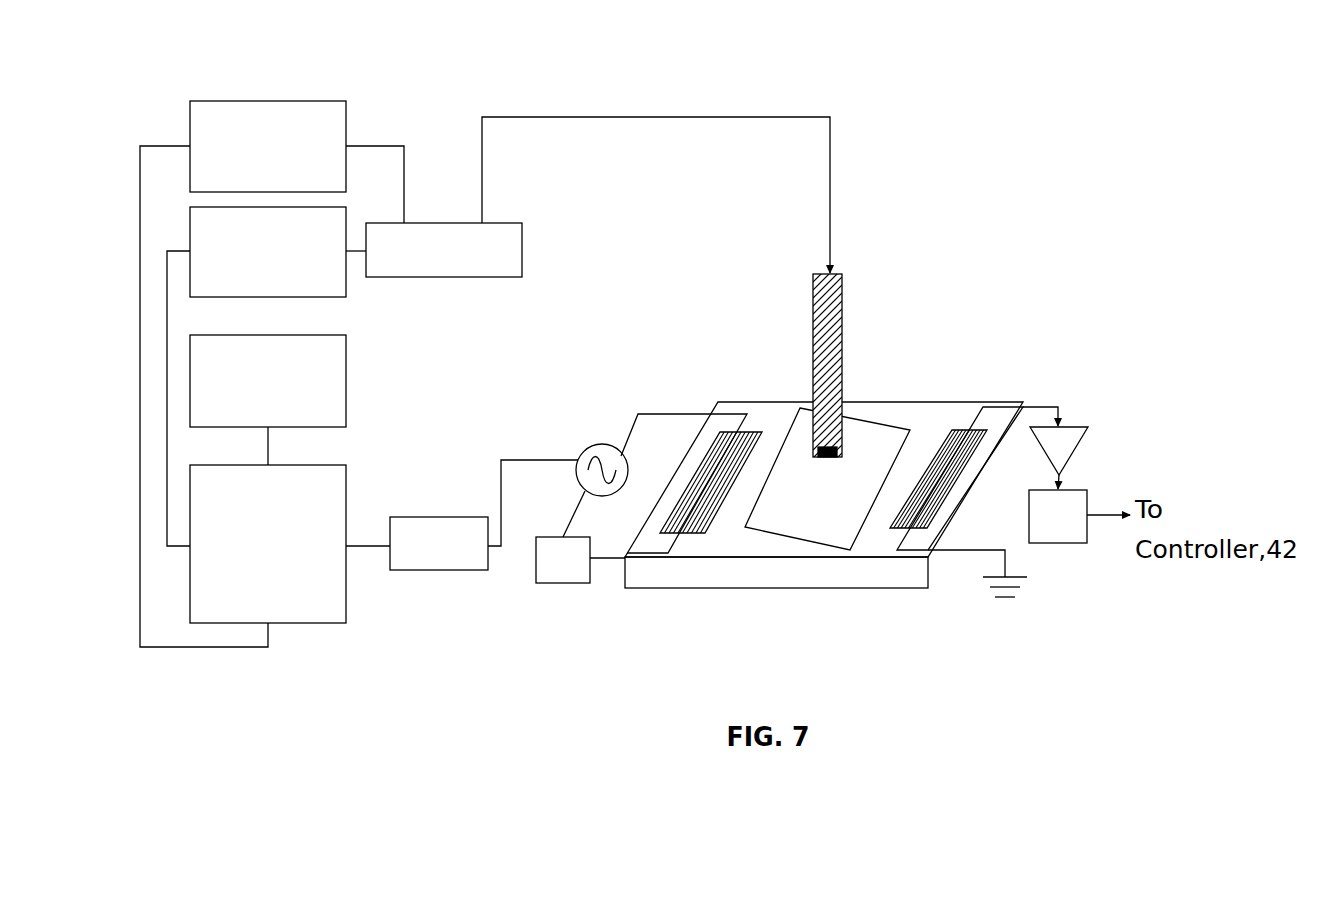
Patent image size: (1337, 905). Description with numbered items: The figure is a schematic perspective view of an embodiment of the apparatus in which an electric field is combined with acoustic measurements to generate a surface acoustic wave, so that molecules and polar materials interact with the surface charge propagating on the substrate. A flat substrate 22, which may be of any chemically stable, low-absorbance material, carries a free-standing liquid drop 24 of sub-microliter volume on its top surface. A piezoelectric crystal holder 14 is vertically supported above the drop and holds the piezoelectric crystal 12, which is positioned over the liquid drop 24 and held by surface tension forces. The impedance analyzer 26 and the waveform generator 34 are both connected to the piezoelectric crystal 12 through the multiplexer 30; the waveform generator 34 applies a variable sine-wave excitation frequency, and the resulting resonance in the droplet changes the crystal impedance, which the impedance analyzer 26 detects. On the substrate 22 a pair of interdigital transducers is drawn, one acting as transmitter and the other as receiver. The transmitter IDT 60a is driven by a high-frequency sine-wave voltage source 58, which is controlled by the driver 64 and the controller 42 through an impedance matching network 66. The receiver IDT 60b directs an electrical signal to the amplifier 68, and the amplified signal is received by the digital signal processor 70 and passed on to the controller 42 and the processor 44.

The impedance analyzer 26 is at (347, 100).
The waveform generator 34 is at (347, 298).
The multiplexer 30 is at (444, 280).
The processor 44 is at (348, 399).
The controller 42 is at (313, 626).
The driver 64 is at (434, 572).
The high-frequency sine-wave voltage source 58 is at (588, 443).
The impedance matching network 66 is at (578, 579).
The substrate 22 is at (800, 576).
The transmitter IDT 60a is at (728, 507).
The receiver IDT 60b is at (949, 427).
The liquid drop 24 is at (812, 504).
The piezoelectric crystal holder 14 is at (846, 362).
The piezoelectric crystal 12 is at (833, 443).
The amplifier 68 is at (1046, 457).
The digital signal processor 70 is at (1043, 534).